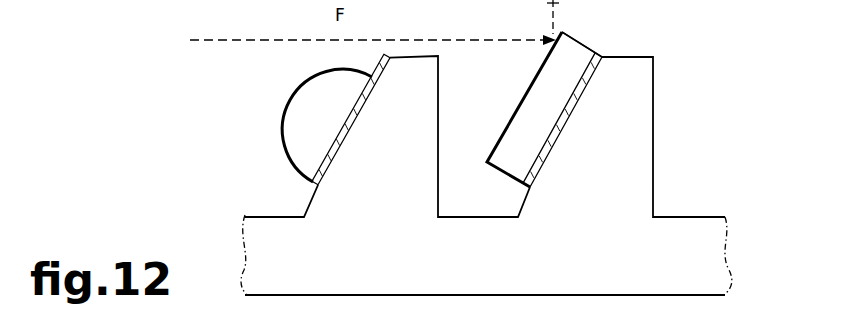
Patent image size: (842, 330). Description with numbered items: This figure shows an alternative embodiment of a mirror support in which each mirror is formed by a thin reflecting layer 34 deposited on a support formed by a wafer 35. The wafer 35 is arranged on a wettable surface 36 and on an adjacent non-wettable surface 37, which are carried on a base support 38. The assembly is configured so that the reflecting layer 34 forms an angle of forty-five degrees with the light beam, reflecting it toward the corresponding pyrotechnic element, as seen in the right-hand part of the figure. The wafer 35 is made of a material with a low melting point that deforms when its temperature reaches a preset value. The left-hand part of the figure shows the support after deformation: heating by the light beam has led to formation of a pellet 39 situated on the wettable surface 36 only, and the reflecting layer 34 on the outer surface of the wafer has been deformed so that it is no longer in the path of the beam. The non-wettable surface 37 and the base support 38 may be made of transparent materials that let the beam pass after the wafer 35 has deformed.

The reflecting layer 34 is at (306, 82).
The wafer 35 is at (575, 53).
The wettable surface 36 is at (328, 152).
The non-wettable surface 37 is at (380, 67).
The base support 38 is at (645, 170).
The pellet 39 is at (307, 145).